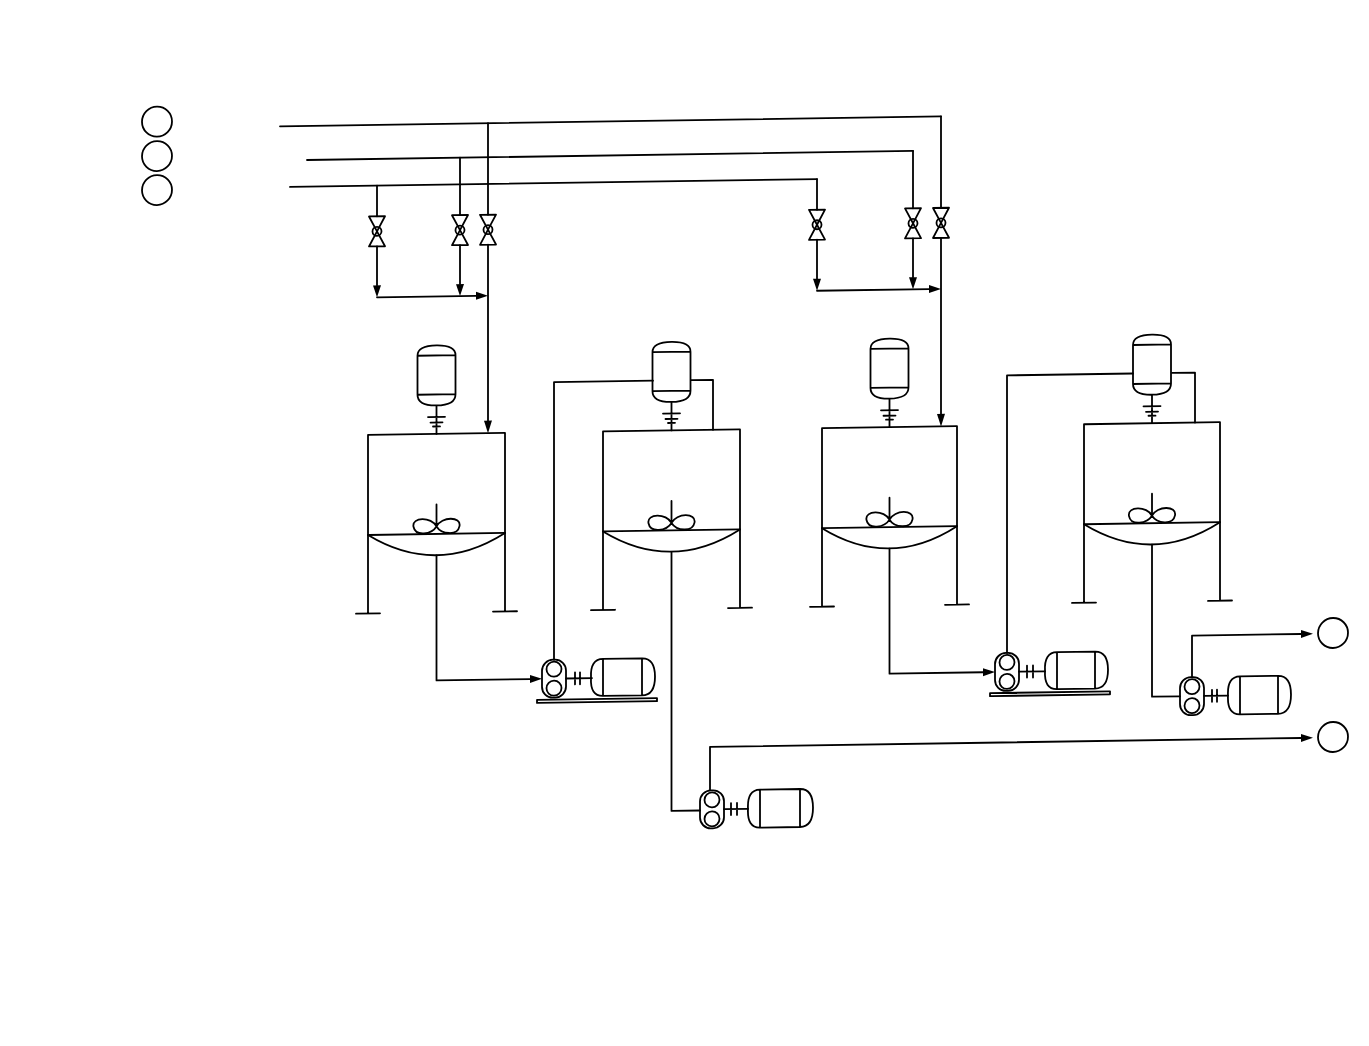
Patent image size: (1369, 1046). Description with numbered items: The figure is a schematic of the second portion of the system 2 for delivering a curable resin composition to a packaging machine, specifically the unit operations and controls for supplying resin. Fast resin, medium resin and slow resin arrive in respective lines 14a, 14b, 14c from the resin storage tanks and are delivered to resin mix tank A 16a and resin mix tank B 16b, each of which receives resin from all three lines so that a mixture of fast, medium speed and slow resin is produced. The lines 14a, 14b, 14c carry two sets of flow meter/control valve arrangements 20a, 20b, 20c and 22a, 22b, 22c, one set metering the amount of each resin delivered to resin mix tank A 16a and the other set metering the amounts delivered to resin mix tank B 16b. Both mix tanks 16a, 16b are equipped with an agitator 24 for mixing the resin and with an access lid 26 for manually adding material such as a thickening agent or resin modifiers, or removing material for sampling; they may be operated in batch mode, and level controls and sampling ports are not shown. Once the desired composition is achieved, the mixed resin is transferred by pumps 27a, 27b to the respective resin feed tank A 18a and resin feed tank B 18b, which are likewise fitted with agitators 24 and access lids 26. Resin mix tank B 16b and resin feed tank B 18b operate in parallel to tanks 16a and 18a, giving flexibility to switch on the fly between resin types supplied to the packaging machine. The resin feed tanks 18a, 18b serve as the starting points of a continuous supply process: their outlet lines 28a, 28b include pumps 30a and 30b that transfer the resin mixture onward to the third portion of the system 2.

The system 2 is at (1176, 150).
The fast resin line 14a is at (336, 123).
The medium resin line 14b is at (378, 159).
The slow resin line 14c is at (310, 186).
The resin mix tank A 16a is at (368, 476).
The resin mix tank B 16b is at (822, 474).
The resin feed tank A 18a is at (740, 503).
The resin feed tank B 18b is at (1220, 477).
The flow meter/control valve arrangement 20a is at (497, 242).
The flow meter/control valve arrangement 20b is at (452, 223).
The flow meter/control valve arrangement 20c is at (368, 222).
The flow meter/control valve arrangement 22a is at (950, 240).
The flow meter/control valve arrangement 22b is at (905, 223).
The flow meter/control valve arrangement 22c is at (810, 223).
The agitator 24 is at (418, 530).
The access lid 26 is at (400, 434).
The pump 27a is at (615, 663).
The pump 27b is at (1067, 662).
The outlet line 28a is at (943, 752).
The outlet line 28b is at (1257, 647).
The pump 30a is at (812, 806).
The pump 30b is at (1290, 703).